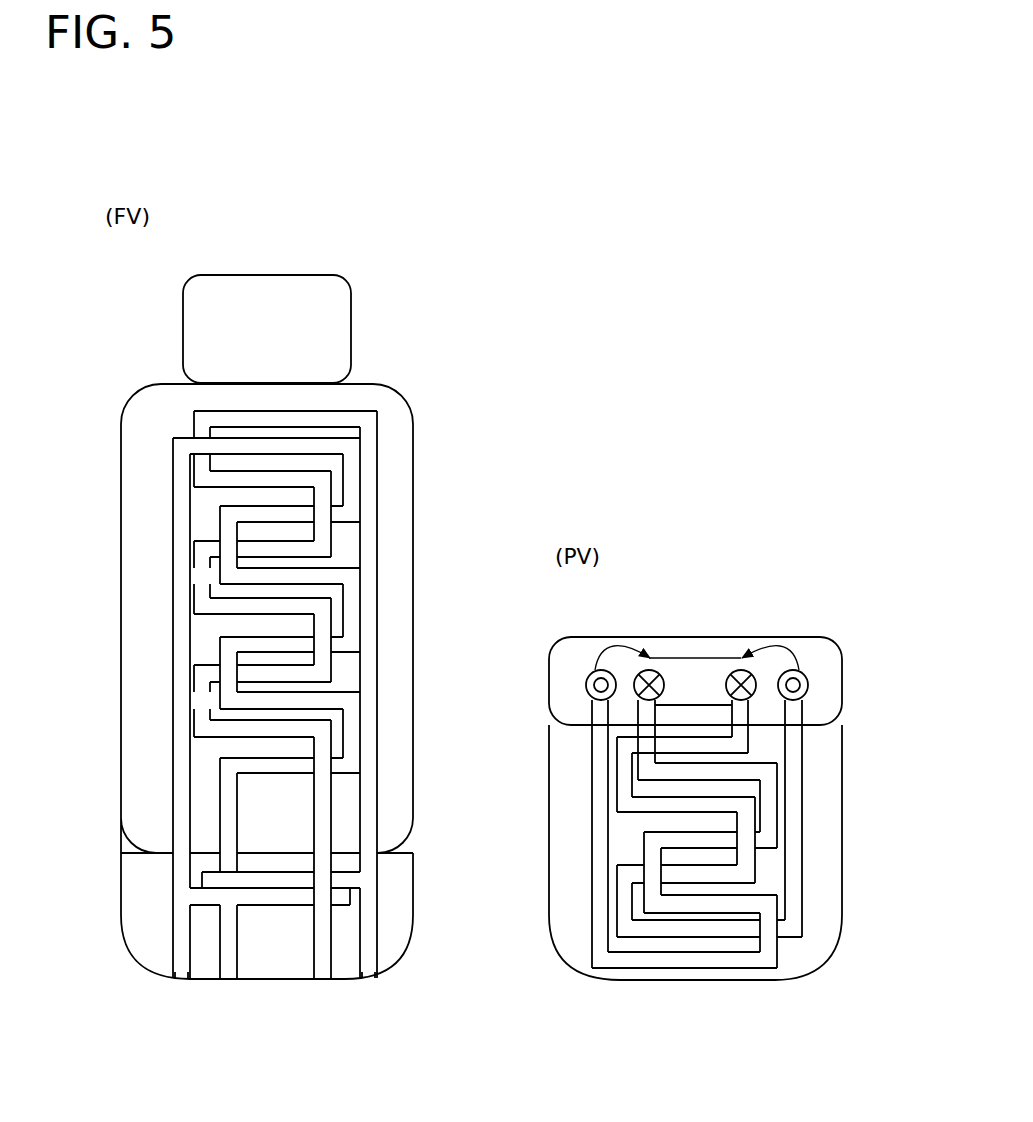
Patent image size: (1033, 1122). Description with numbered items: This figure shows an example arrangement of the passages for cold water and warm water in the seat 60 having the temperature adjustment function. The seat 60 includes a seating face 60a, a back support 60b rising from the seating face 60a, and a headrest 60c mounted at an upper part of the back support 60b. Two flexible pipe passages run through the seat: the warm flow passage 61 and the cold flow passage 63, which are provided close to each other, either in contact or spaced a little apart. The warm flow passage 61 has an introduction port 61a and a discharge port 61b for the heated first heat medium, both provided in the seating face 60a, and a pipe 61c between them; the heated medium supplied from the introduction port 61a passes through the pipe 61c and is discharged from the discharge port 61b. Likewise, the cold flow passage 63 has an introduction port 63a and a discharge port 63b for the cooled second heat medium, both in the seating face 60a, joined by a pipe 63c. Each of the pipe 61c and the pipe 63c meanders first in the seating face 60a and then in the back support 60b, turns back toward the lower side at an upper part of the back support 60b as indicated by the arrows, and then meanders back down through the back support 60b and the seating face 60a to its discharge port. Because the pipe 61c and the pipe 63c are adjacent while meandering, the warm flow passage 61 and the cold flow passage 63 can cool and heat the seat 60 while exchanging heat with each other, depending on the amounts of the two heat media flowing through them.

The seat 60 is at (524, 627).
The seating face 60a is at (414, 875).
The back support 60b is at (414, 592).
The headrest 60c is at (352, 317).
The warm flow passage 61 is at (211, 750).
The introduction port 61a is at (178, 983).
The discharge port 61b is at (232, 983).
The pipe 61c is at (170, 775).
The cold flow passage 63 is at (341, 737).
The introduction port 63a is at (372, 983).
The discharge port 63b is at (325, 983).
The pipe 63c is at (364, 748).